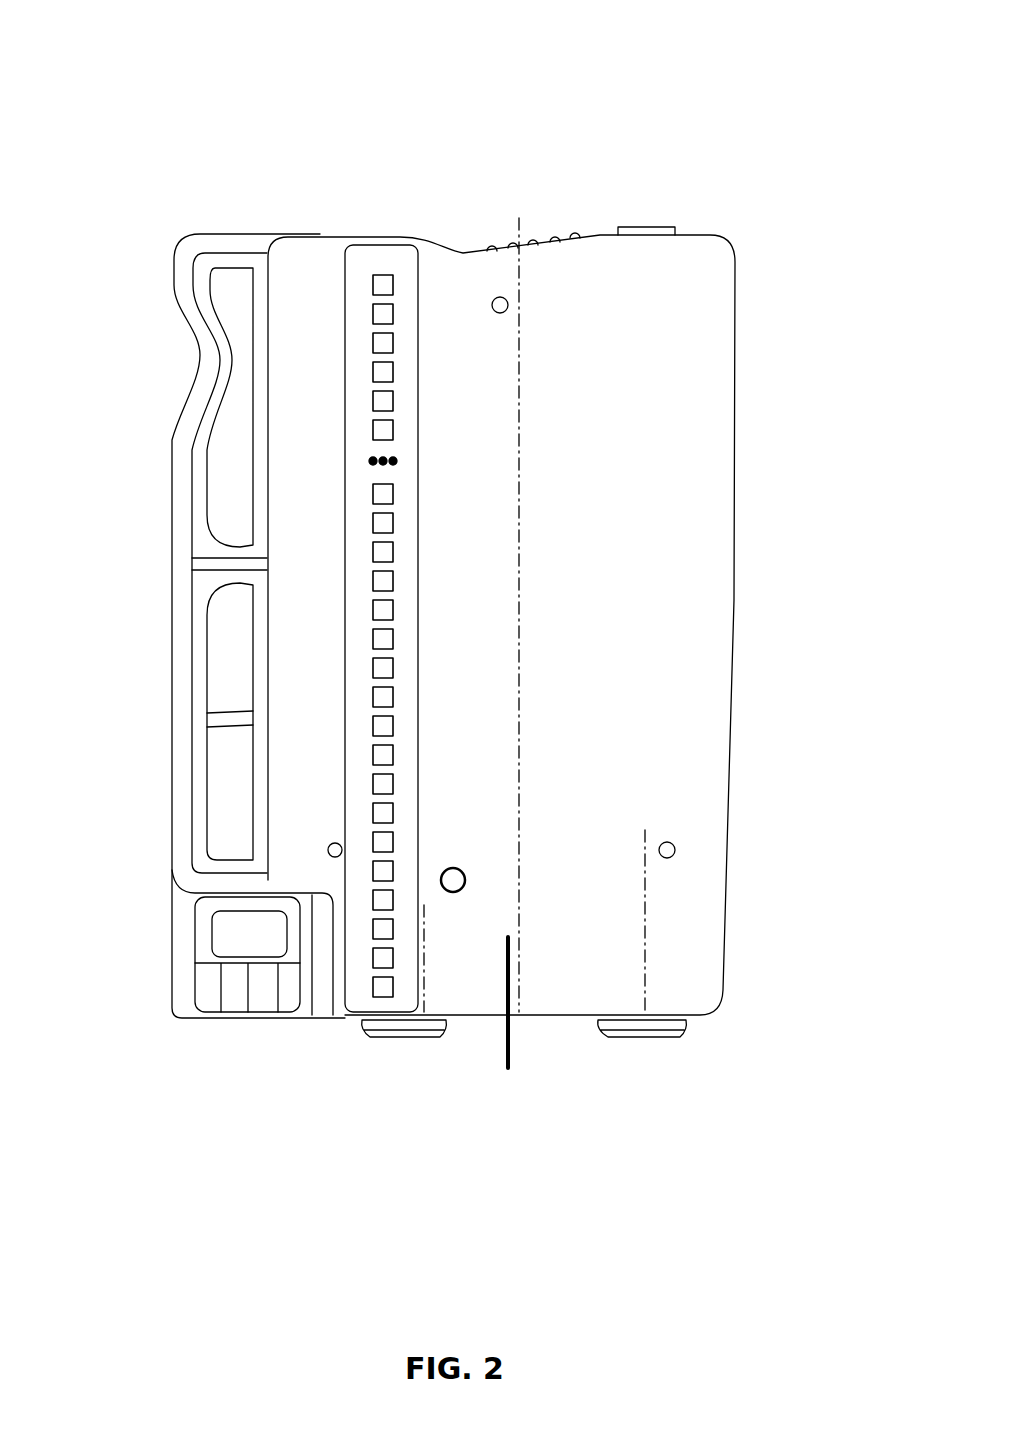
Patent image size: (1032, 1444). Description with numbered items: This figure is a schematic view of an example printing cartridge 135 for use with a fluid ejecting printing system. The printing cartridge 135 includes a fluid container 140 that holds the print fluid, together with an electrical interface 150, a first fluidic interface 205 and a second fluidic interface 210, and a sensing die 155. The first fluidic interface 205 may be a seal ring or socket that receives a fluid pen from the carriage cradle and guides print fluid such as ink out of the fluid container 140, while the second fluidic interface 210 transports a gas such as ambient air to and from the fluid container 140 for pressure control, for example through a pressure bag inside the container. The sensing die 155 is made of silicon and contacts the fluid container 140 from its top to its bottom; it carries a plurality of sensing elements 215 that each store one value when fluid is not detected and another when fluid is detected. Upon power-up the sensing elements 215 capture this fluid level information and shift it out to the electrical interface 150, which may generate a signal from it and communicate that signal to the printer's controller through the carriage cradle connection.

The printing cartridge 135 is at (652, 56).
The fluid container 140 is at (647, 692).
The sensing die 155 is at (421, 278).
The sensing elements 215 is at (383, 270).
The electrical interface 150 is at (197, 962).
The second fluidic interface 210 is at (372, 1038).
The first fluidic interface 205 is at (672, 1038).